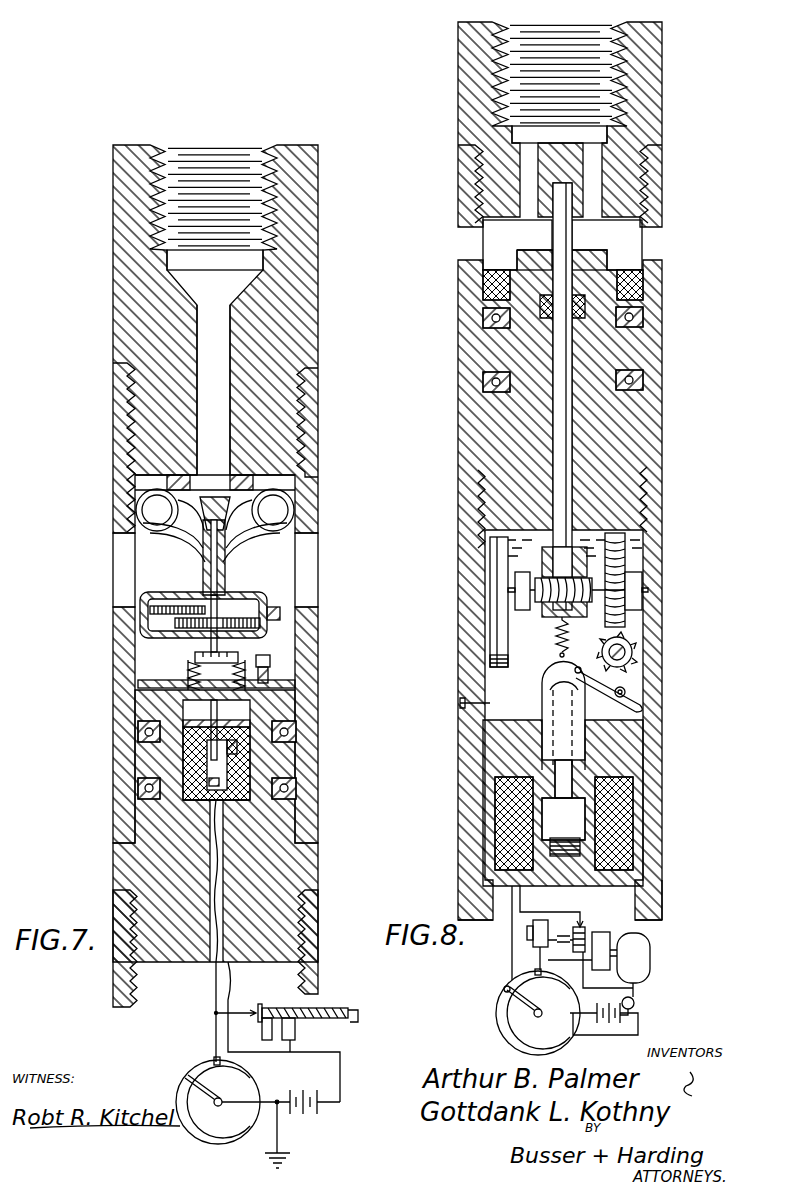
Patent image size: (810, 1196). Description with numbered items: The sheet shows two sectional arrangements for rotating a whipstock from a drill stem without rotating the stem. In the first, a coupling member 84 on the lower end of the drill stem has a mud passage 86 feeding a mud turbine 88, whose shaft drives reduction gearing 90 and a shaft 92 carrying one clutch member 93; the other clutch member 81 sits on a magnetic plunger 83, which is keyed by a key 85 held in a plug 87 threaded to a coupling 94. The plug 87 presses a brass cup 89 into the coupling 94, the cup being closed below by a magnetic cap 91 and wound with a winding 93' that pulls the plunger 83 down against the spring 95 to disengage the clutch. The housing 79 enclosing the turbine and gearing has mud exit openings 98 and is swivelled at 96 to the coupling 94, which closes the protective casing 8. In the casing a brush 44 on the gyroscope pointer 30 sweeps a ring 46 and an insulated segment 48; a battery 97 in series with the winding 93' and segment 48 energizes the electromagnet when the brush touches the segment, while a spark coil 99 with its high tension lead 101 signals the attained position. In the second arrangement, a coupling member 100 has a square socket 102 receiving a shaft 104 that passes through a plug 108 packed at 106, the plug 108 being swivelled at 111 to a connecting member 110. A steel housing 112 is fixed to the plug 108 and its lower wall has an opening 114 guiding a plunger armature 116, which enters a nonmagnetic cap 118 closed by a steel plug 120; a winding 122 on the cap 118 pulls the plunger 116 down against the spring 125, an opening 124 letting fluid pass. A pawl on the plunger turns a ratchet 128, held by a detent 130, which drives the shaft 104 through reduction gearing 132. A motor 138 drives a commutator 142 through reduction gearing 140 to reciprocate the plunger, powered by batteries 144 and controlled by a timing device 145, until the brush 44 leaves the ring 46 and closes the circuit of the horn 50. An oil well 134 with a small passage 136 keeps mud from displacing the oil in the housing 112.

In FIG. 7, the coupling member 84 is at (122, 243).
In FIG. 7, the mud passage 86 is at (210, 358).
In FIG. 7, the mud turbine 88 is at (137, 497).
In FIG. 7, the housing 79 is at (300, 500).
In FIG. 7, the exit openings 98 is at (125, 548).
In FIG. 7, the reduction gearing 90 is at (145, 596).
In FIG. 7, the shaft 92 is at (210, 647).
In FIG. 7, the clutch member 93 is at (280, 636).
In FIG. 7, the clutch member 81 is at (262, 660).
In FIG. 7, the spring 95 is at (186, 667).
In FIG. 7, the key 85 is at (270, 685).
In FIG. 7, the plunger 83 is at (180, 717).
In FIG. 7, the plug 87 is at (296, 732).
In FIG. 7, the cup 89 is at (296, 760).
In FIG. 7, the winding 93' is at (299, 759).
In FIG. 7, the magnetic cap 91 is at (250, 800).
In FIG. 7, the swivel 96 is at (137, 780).
In FIG. 7, the coupling 94 is at (135, 863).
In FIG. 7, the protective casing 8 is at (318, 958).
In FIG. 8, the protective casing 8 is at (667, 882).
In FIG. 7, the spark coil 99 is at (292, 1008).
In FIG. 7, the high tension lead 101 is at (358, 1014).
In FIG. 7, the brush 44 is at (187, 1073).
In FIG. 8, the brush 44 is at (505, 985).
In FIG. 7, the insulated conducting segment 48 is at (220, 1066).
In FIG. 8, the insulated conducting segment 48 is at (541, 976).
In FIG. 7, the gyroscope pointer 30 is at (204, 1093).
In FIG. 8, the gyroscope pointer 30 is at (520, 1003).
In FIG. 7, the ring 46 is at (209, 1142).
In FIG. 8, the ring 46 is at (497, 1026).
In FIG. 7, the battery 97 is at (316, 1110).
In FIG. 8, the coupling member 100 is at (462, 78).
In FIG. 8, the square socket 102 is at (562, 245).
In FIG. 8, the packing 106 is at (603, 252).
In FIG. 8, the connecting member 110 is at (467, 345).
In FIG. 8, the swivel 111 is at (655, 360).
In FIG. 8, the shaft 104 is at (565, 423).
In FIG. 8, the plug 108 is at (472, 442).
In FIG. 8, the reduction gearing 132 is at (620, 553).
In FIG. 8, the well 134 is at (495, 575).
In FIG. 8, the housing 112 is at (648, 588).
In FIG. 8, the small passage 136 is at (482, 624).
In FIG. 8, the ratchet 128 is at (648, 640).
In FIG. 8, the spring 125 is at (542, 641).
In FIG. 8, the detent 130 is at (650, 690).
In FIG. 8, the plunger armature 116 is at (577, 712).
In FIG. 8, the opening 114 is at (650, 747).
In FIG. 8, the opening 124 is at (562, 775).
In FIG. 8, the winding 122 is at (510, 820).
In FIG. 8, the cap 118 is at (585, 820).
In FIG. 8, the steel plug 120 is at (580, 868).
In FIG. 8, the horn 50 is at (542, 920).
In FIG. 8, the commutator 142 is at (580, 922).
In FIG. 8, the reduction gearing 140 is at (600, 932).
In FIG. 8, the motor 138 is at (650, 941).
In FIG. 8, the timing device 145 is at (634, 1000).
In FIG. 8, the batteries 144 is at (625, 1018).